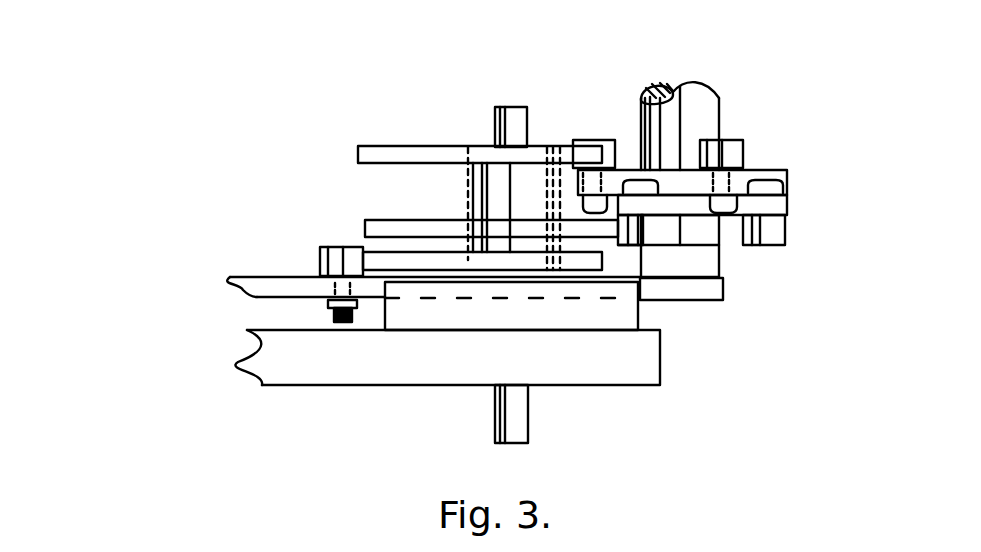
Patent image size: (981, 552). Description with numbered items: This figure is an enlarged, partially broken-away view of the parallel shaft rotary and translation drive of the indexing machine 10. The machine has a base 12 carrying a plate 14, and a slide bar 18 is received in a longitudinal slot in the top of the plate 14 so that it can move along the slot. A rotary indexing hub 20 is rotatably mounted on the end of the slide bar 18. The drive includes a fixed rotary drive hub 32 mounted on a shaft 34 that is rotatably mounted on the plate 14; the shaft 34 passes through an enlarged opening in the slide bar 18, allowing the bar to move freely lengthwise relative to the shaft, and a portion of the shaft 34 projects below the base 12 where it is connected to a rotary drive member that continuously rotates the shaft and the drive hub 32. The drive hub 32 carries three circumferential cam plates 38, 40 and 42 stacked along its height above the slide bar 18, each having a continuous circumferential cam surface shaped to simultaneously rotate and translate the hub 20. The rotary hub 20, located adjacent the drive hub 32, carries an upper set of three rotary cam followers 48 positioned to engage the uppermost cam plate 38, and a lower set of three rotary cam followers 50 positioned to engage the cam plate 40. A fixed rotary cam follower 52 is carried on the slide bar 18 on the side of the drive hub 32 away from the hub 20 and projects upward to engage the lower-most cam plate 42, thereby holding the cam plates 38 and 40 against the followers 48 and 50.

The indexing machine 10 is at (172, 404).
The base 12 is at (640, 388).
The plate 14 is at (643, 312).
The slide bar 18 is at (243, 273).
The rotary indexing hub 20 is at (717, 85).
The fixed rotary drive hub 32 is at (468, 190).
The shaft 34 is at (518, 105).
The cam plate 38 is at (391, 146).
The cam plate 40 is at (407, 220).
The cam plate 42 is at (427, 272).
The rotary cam followers 48 is at (700, 147).
The rotary cam followers 50 is at (650, 248).
The fixed rotary cam follower 52 is at (317, 258).